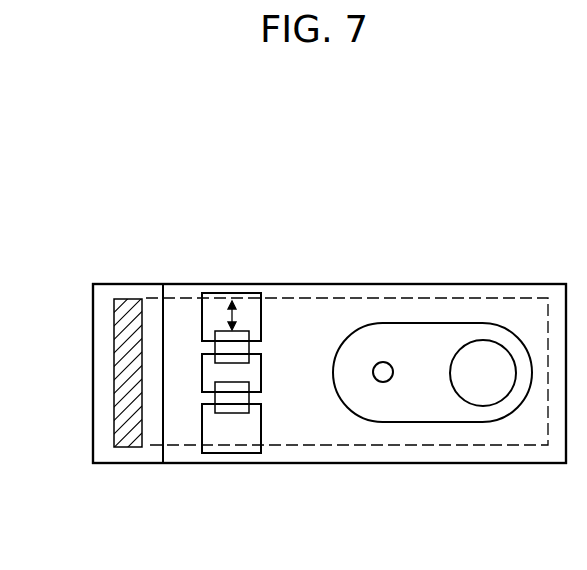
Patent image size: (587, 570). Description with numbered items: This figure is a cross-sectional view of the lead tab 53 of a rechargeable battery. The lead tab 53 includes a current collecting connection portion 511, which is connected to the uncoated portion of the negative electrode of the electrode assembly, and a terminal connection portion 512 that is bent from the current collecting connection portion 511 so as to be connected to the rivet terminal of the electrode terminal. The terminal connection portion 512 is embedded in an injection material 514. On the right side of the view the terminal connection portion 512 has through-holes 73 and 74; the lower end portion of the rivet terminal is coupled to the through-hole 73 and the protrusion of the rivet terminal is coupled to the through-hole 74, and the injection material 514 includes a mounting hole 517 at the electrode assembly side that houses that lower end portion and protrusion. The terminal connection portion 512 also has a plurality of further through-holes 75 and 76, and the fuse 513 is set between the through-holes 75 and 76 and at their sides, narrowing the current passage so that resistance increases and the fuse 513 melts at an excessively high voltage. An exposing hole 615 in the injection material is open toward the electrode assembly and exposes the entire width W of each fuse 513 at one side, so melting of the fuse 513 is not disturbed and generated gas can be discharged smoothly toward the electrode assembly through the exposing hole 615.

The lead tab 53 is at (320, 143).
The current collecting connection portion 511 is at (128, 377).
The terminal connection portion 512 is at (450, 445).
The fuse 513 is at (207, 373).
The injection material 514 is at (529, 462).
The mounting hole 517 is at (415, 323).
The through-hole 73 is at (472, 342).
The through-hole 74 is at (382, 370).
The through-hole 75 is at (235, 360).
The through-hole 76 is at (223, 410).
The exposing hole 615 is at (253, 367).
The width W is at (229, 313).